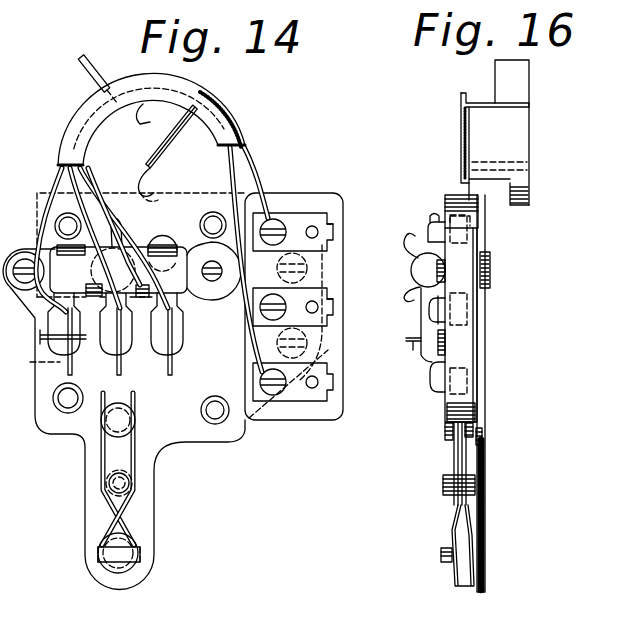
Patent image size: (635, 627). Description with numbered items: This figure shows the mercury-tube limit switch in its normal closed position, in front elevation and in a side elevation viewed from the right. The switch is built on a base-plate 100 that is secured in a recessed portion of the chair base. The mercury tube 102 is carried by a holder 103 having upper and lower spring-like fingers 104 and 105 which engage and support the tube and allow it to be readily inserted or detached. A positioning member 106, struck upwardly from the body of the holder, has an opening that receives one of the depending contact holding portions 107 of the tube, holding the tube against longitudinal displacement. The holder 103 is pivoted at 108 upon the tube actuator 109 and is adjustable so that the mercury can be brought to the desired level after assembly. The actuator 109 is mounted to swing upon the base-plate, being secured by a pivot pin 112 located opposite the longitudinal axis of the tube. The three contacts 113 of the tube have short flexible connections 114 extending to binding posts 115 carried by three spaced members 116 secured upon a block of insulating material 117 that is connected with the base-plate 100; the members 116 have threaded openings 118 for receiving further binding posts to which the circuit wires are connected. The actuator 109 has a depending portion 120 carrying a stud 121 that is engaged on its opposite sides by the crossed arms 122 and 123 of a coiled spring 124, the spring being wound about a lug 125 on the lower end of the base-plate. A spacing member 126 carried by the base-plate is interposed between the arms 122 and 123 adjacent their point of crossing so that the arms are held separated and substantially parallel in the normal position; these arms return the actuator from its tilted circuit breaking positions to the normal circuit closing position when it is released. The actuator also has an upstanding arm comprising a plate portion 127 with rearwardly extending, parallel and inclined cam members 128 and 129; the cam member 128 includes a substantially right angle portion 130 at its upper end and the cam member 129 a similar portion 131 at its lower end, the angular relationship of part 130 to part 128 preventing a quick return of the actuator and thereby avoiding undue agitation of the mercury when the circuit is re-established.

In FIG. 14, the base-plate 100 is at (245, 424).
In FIG. 16, the base-plate 100 is at (485, 490).
In FIG. 14, the mercury tube 102 is at (38, 272).
In FIG. 16, the mercury tube 102 is at (412, 268).
In FIG. 14, the holder 103 is at (18, 250).
In FIG. 14, the upper spring-like fingers 104 is at (165, 240).
In FIG. 16, the upper spring-like fingers 104 is at (430, 219).
In FIG. 14, the lower spring-like fingers 105 is at (118, 351).
In FIG. 16, the lower spring-like fingers 105 is at (416, 298).
In FIG. 14, the positioning member 106 is at (40, 338).
In FIG. 16, the positioning member 106 is at (410, 350).
In FIG. 14, the depending contact holding portions 107 is at (55, 346).
In FIG. 14, the pivot 108 is at (38, 318).
In FIG. 14, the tube actuator 109 is at (52, 208).
In FIG. 14, the pivot pin 112 is at (118, 222).
In FIG. 16, the pivot pin 112 is at (490, 280).
In FIG. 14, the contacts 113 is at (62, 362).
In FIG. 14, the flexible connections 114 is at (62, 178).
In FIG. 14, the binding posts 115 is at (265, 222).
In FIG. 16, the binding posts 115 is at (445, 208).
In FIG. 14, the spaced members 116 is at (326, 224).
In FIG. 14, the block of insulating material 117 is at (322, 420).
In FIG. 16, the block of insulating material 117 is at (468, 348).
In FIG. 14, the threaded openings 118 is at (314, 240).
In FIG. 14, the depending portion 120 is at (97, 414).
In FIG. 16, the depending portion 120 is at (482, 437).
In FIG. 14, the stud 121 is at (113, 433).
In FIG. 16, the stud 121 is at (447, 430).
In FIG. 14, the crossed arm 122 is at (105, 470).
In FIG. 14, the crossed arm 123 is at (135, 470).
In FIG. 16, the crossed arm 123 is at (457, 450).
In FIG. 14, the coiled spring 124 is at (138, 572).
In FIG. 16, the coiled spring 124 is at (460, 585).
In FIG. 14, the lug 125 is at (135, 554).
In FIG. 16, the lug 125 is at (442, 552).
In FIG. 14, the spacing member 126 is at (130, 488).
In FIG. 16, the spacing member 126 is at (446, 484).
In FIG. 14, the plate portion 127 is at (124, 92).
In FIG. 16, the plate portion 127 is at (461, 128).
In FIG. 14, the cam member 128 is at (84, 118).
In FIG. 14, the cam member 129 is at (170, 142).
In FIG. 16, the cam member 129 is at (515, 148).
In FIG. 14, the right angle portion 130 is at (80, 72).
In FIG. 16, the right angle portion 130 is at (495, 70).
In FIG. 14, the angle portion 131 is at (140, 182).
In FIG. 16, the angle portion 131 is at (529, 188).